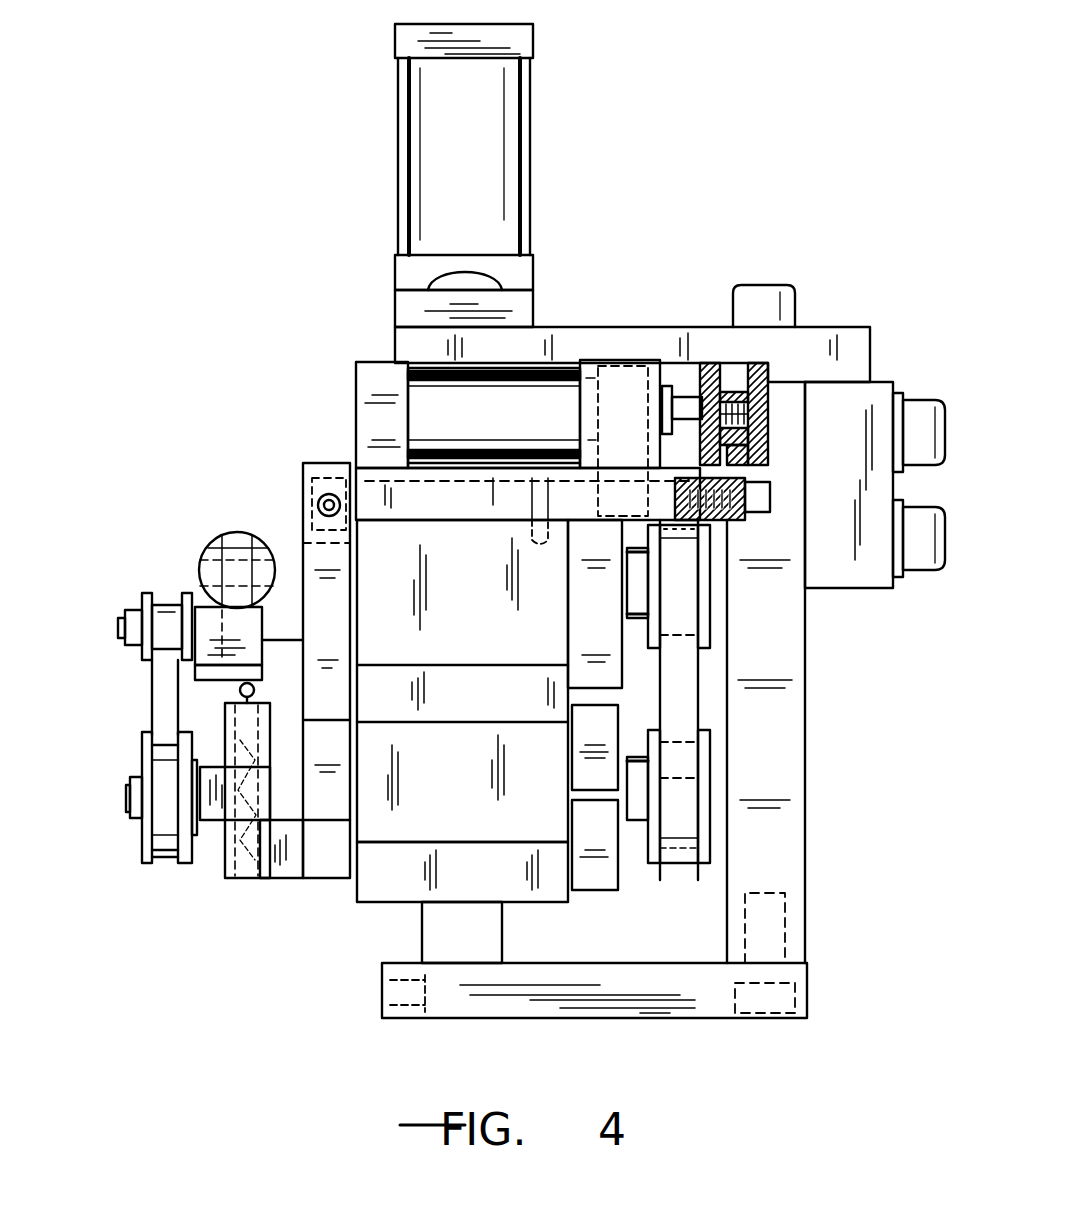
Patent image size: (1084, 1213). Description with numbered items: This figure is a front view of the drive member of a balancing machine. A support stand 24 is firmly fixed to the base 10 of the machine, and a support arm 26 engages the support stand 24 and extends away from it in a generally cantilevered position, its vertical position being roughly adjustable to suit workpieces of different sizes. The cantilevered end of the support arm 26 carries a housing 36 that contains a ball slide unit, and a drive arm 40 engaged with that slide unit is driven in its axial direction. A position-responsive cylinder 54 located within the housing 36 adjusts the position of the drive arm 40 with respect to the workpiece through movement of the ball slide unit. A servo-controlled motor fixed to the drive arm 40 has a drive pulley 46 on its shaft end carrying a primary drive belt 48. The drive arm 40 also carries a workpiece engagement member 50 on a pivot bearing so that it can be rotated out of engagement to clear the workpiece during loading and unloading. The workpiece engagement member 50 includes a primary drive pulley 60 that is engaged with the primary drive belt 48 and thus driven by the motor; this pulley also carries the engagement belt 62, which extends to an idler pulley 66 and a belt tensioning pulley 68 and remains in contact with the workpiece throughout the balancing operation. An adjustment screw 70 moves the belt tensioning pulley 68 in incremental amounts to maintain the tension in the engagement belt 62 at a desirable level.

The base 10 is at (605, 1003).
The support stand 24 is at (778, 856).
The support arm 26 is at (775, 648).
The housing 36 is at (375, 417).
The drive arm 40 is at (588, 623).
The drive pulley 46 is at (727, 595).
The primary drive belt 48 is at (680, 703).
The workpiece engagement member 50 is at (290, 865).
The position-responsive cylinder 54 is at (527, 145).
The primary drive pulley 60 is at (710, 797).
The engagement belt 62 is at (164, 712).
The idler pulley 66 is at (133, 828).
The belt tensioning pulley 68 is at (138, 603).
The adjustment screw 70 is at (240, 697).